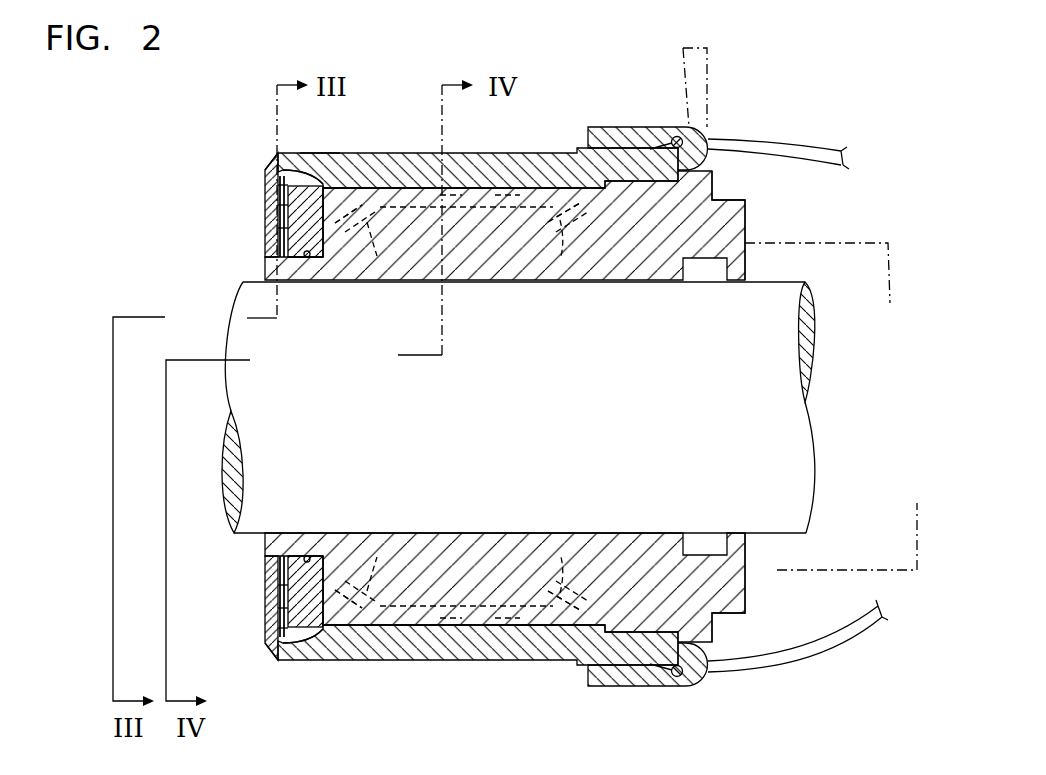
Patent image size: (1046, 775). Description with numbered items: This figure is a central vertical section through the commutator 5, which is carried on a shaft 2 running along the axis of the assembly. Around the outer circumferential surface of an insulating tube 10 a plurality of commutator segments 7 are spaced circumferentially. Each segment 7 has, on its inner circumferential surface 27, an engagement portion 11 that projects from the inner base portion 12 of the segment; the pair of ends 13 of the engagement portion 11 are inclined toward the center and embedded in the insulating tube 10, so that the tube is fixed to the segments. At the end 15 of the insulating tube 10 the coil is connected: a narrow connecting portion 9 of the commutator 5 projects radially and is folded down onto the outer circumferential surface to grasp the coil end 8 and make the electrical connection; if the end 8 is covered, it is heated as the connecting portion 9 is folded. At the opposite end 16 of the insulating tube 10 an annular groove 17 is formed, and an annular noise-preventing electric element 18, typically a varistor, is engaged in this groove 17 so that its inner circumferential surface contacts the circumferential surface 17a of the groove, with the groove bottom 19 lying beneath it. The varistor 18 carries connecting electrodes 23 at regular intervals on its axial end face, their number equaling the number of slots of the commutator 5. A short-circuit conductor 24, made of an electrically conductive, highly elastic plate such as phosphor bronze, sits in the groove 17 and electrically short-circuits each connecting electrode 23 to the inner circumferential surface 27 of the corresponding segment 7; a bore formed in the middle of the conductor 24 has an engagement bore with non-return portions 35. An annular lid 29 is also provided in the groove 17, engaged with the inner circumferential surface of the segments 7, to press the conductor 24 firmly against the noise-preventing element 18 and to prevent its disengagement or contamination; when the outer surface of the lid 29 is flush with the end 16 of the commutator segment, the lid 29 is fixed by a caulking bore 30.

The rotary shaft 2 is at (787, 405).
The commutator 5 is at (549, 148).
The commutator segment 7 is at (493, 152).
The end of the coil 8 is at (796, 144).
The connecting portion 9 is at (632, 127).
The insulating tube 10 is at (636, 240).
The engagement portion 11 is at (495, 210).
The inner base portion 12 is at (457, 178).
The ends of the engagement portion 13 is at (377, 256).
The end of the insulating tube 15 is at (745, 222).
The end of the insulating tube 16 is at (278, 166).
The annular groove 17 is at (278, 245).
The circumferential surface of the annular groove 17a is at (310, 257).
The noise-preventing electric element 18 is at (330, 200).
The seal groove 19 is at (293, 257).
The connecting electrode 23 is at (265, 186).
The short-circuit conductor 24 is at (274, 160).
The housing end face 27 is at (322, 152).
The lid 29 is at (254, 198).
The caulking bore 30 is at (268, 172).
The non-return portion 35 is at (270, 211).